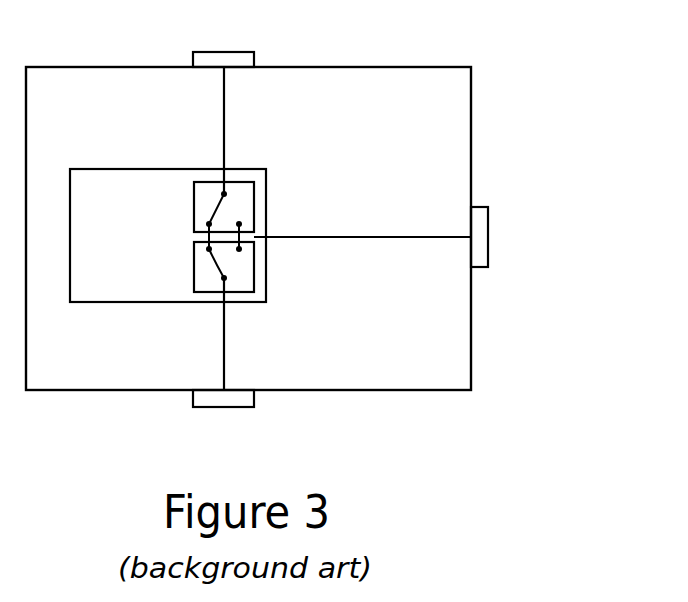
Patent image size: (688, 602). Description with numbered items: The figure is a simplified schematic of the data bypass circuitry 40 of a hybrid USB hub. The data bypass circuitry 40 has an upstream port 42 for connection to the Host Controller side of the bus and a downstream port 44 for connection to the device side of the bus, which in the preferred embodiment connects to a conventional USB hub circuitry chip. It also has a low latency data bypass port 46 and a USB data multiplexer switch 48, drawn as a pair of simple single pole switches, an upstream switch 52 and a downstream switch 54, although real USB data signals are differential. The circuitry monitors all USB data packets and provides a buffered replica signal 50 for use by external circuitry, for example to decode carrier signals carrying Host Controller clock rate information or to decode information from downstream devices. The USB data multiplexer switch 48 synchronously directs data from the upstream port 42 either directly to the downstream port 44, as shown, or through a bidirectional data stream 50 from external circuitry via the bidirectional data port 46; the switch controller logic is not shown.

The data bypass circuitry 40 is at (574, 121).
The upstream port 42 is at (240, 52).
The downstream port 44 is at (230, 408).
The low latency data bypass port 46 is at (489, 255).
The USB data multiplexer switch 48 is at (111, 241).
The buffered replica signal 50 is at (348, 238).
The upstream switch 52 is at (195, 197).
The downstream switch 54 is at (195, 278).